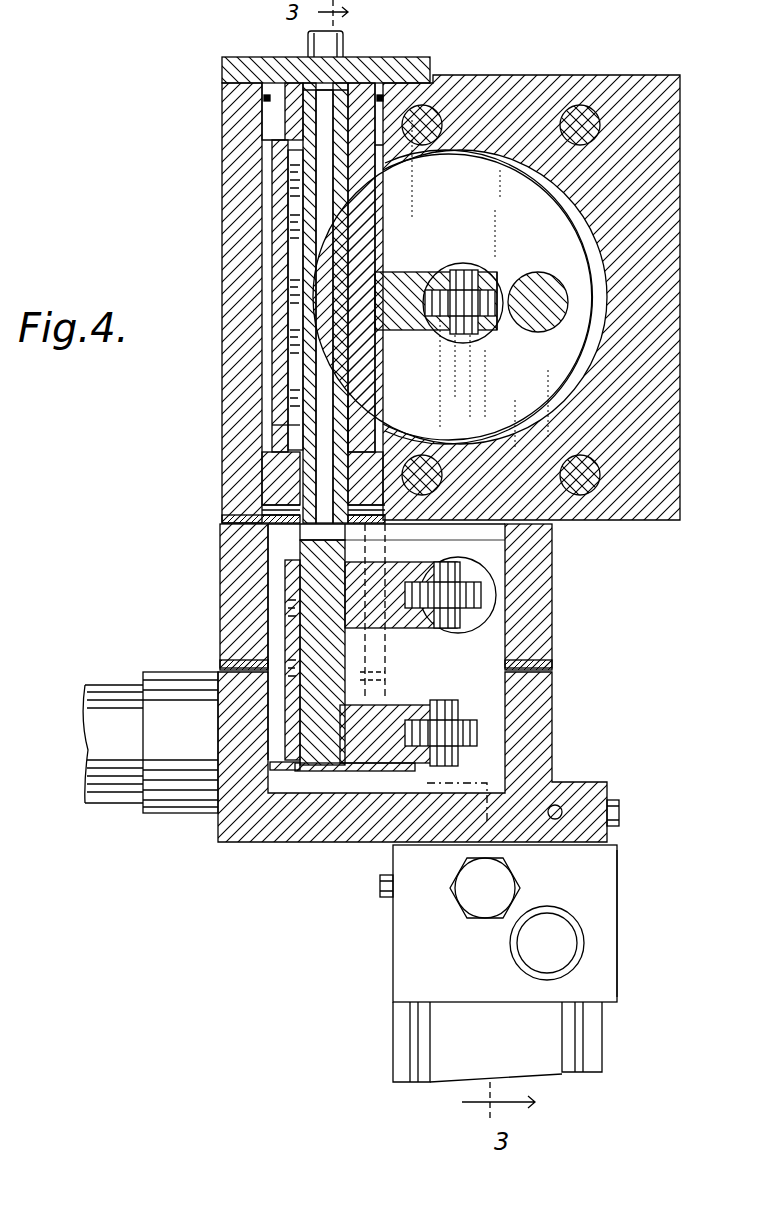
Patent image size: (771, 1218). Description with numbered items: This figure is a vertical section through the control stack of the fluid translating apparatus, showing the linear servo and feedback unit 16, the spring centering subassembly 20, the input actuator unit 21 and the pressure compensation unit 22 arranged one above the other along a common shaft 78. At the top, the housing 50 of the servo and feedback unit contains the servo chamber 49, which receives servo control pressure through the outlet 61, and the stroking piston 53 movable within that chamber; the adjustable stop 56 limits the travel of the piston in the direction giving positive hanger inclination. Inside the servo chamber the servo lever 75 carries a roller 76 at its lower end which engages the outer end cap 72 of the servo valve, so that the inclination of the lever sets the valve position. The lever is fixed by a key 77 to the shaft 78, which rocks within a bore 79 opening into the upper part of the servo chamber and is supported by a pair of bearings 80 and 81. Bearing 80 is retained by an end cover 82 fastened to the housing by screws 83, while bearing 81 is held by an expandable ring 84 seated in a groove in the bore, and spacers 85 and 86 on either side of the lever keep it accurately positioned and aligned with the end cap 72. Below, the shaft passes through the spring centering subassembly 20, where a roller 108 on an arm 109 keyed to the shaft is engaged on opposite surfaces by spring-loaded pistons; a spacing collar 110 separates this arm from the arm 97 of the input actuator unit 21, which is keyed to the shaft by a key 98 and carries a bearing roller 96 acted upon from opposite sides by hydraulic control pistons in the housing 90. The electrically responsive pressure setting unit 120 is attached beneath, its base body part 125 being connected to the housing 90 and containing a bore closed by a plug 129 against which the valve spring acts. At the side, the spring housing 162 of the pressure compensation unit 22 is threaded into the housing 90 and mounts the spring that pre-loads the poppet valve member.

The linear servo and feedback unit 16 is at (199, 220).
The spring centering subassembly 20 is at (208, 582).
The input actuator unit 21 is at (257, 854).
The pressure compensation unit 22 is at (79, 688).
The servo chamber 49 is at (607, 297).
The housing 50 is at (630, 80).
The stroking piston 53 is at (520, 416).
The adjustable stop 56 is at (532, 274).
The outlet 61 is at (262, 437).
The outer end cap of the servo valve 72 is at (450, 268).
The servo lever 75 is at (403, 332).
The roller 76 is at (497, 315).
The key 77 is at (296, 255).
The shaft 78 is at (300, 165).
The bore 79 is at (286, 150).
The bearing 80 is at (362, 88).
The bearing 81 is at (278, 477).
The end cover 82 is at (240, 62).
The screws 83 is at (343, 36).
The expandable ring 84 is at (378, 530).
The spacer 85 is at (376, 230).
The spacer 86 is at (378, 408).
The housing 90 is at (538, 698).
The bearing roller 96 is at (484, 680).
The arm 97 is at (318, 783).
The key 98 is at (300, 620).
The roller 108 is at (482, 628).
The arm 109 is at (432, 630).
The spacing collar 110 is at (360, 690).
The electrically responsive pressure setting unit 120 is at (380, 1002).
The base body part 125 is at (606, 928).
The plug 129 is at (468, 898).
The spring housing 162 is at (108, 800).